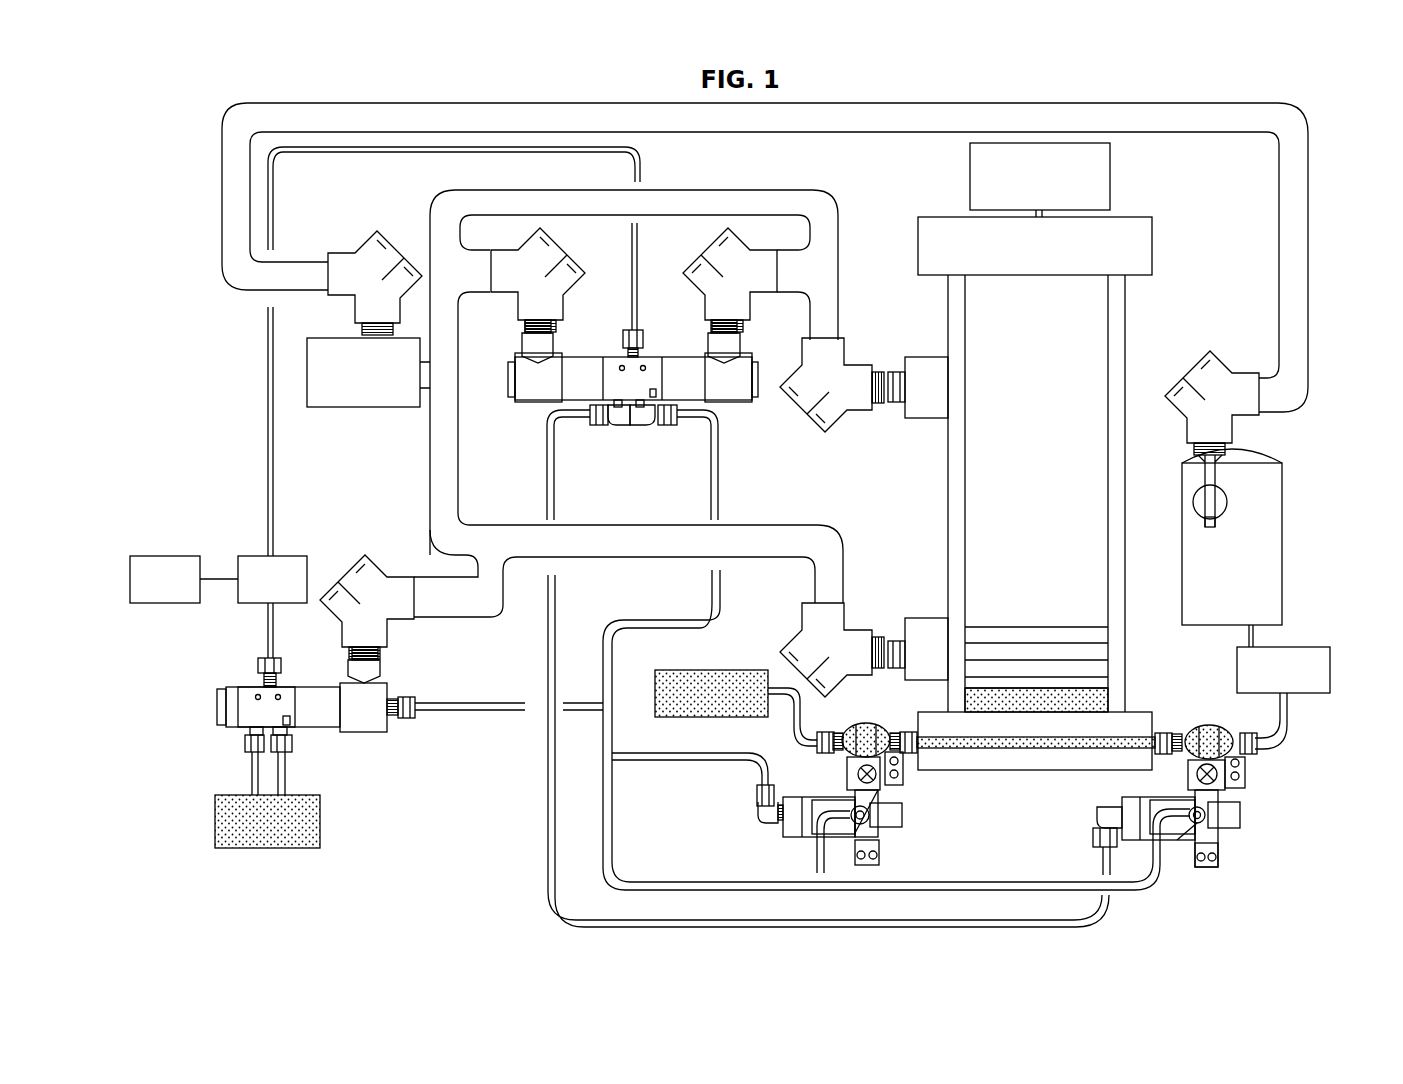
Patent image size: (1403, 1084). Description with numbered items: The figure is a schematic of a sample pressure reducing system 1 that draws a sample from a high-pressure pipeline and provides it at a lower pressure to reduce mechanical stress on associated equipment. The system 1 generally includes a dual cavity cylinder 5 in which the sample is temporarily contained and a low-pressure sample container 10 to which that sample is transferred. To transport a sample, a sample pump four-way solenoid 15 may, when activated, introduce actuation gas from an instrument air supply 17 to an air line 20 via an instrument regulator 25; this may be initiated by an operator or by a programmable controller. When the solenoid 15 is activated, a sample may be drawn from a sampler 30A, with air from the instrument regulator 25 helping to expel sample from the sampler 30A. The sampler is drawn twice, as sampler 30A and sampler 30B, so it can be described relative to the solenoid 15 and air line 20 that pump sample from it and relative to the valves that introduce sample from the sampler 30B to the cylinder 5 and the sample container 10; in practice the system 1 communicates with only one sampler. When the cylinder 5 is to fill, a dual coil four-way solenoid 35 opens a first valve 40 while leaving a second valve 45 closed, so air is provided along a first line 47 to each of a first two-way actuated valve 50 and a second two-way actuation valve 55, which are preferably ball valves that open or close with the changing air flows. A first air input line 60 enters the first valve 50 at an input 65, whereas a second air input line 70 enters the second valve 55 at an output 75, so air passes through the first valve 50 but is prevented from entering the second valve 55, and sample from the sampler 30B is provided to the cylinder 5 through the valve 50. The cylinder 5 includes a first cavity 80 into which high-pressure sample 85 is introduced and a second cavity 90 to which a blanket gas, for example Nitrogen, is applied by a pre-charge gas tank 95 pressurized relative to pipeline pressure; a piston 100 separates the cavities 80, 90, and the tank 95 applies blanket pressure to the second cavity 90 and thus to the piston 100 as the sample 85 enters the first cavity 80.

The pressure reducing system 1 is at (1335, 129).
The dual cavity cylinder 5 is at (1150, 301).
The low-pressure sample container 10 is at (1290, 512).
The sample pump four-way solenoid 15 is at (237, 681).
The instrument air supply 17 is at (176, 553).
The air line 20 is at (267, 470).
The instrument regulator 25 is at (243, 553).
The sampler 30A is at (280, 862).
The sampler 30B is at (650, 700).
The dual coil four-way solenoid 35 is at (657, 351).
The first valve 40 is at (598, 433).
The second valve 45 is at (662, 433).
The first line 47 is at (545, 460).
The first two-way actuated valve 50 is at (910, 828).
The second two-way actuation valve 55 is at (1252, 812).
The first air input line 60 is at (815, 855).
The input 65 is at (880, 815).
The second air input line 70 is at (1108, 905).
The output 75 is at (1087, 833).
The first cavity 80 is at (1080, 703).
The high-pressure sample 85 is at (1080, 657).
The second cavity 90 is at (1085, 416).
The pre-charge gas tank 95 is at (1038, 163).
The piston 100 is at (1003, 646).